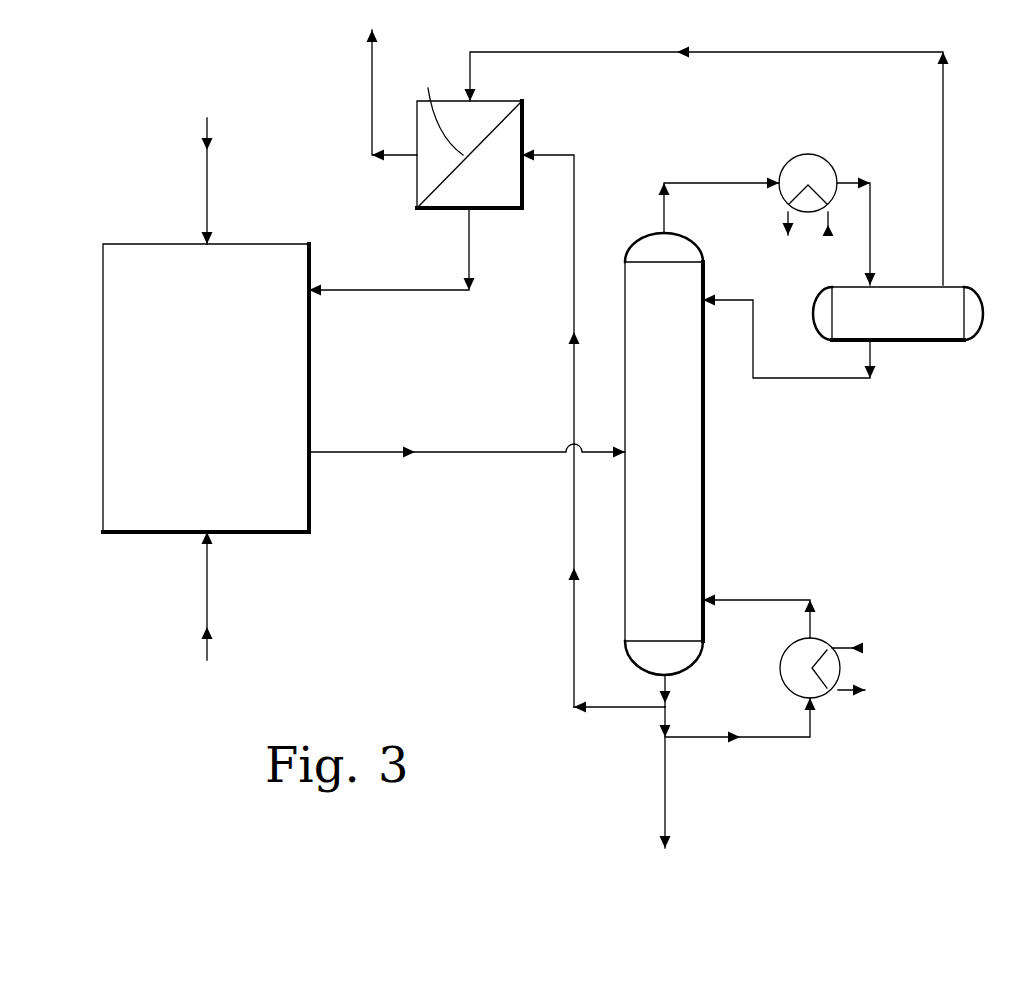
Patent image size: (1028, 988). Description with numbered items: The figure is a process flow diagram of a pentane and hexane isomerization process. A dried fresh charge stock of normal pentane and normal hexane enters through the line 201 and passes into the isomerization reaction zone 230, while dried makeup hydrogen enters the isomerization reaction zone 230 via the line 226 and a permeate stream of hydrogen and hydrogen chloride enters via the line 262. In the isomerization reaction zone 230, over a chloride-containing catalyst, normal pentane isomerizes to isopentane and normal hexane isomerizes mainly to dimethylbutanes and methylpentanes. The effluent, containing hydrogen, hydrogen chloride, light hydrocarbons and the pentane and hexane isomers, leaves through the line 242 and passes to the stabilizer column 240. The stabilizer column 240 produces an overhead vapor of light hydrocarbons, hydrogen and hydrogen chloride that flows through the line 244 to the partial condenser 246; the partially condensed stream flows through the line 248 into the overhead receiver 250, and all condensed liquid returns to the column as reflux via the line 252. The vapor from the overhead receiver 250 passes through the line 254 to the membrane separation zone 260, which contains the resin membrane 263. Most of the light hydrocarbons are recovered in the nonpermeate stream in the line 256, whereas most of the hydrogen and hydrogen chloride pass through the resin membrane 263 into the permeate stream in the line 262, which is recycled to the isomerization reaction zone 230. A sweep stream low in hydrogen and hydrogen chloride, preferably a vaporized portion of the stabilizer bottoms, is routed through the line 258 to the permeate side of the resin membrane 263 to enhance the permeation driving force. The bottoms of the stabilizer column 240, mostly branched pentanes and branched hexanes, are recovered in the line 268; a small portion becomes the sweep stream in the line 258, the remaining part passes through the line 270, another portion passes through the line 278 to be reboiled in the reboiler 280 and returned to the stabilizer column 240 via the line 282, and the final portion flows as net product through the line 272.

The line 201 is at (207, 583).
The line 226 is at (207, 175).
The isomerization reaction zone 230 is at (232, 378).
The stabilizer column 240 is at (692, 462).
The line 242 is at (445, 452).
The line 244 is at (660, 215).
The partial condenser 246 is at (836, 155).
The line 248 is at (870, 212).
The overhead receiver 250 is at (938, 340).
The line 252 is at (830, 378).
The line 254 is at (755, 52).
The line 256 is at (372, 73).
The line 258 is at (574, 300).
The membrane separation zone 260 is at (522, 97).
The line 262 is at (400, 290).
The resin membrane 263 is at (431, 106).
The line 268 is at (672, 686).
The line 270 is at (660, 720).
The line 272 is at (668, 790).
The line 278 is at (795, 737).
The reboiler 280 is at (835, 640).
The line 282 is at (770, 600).